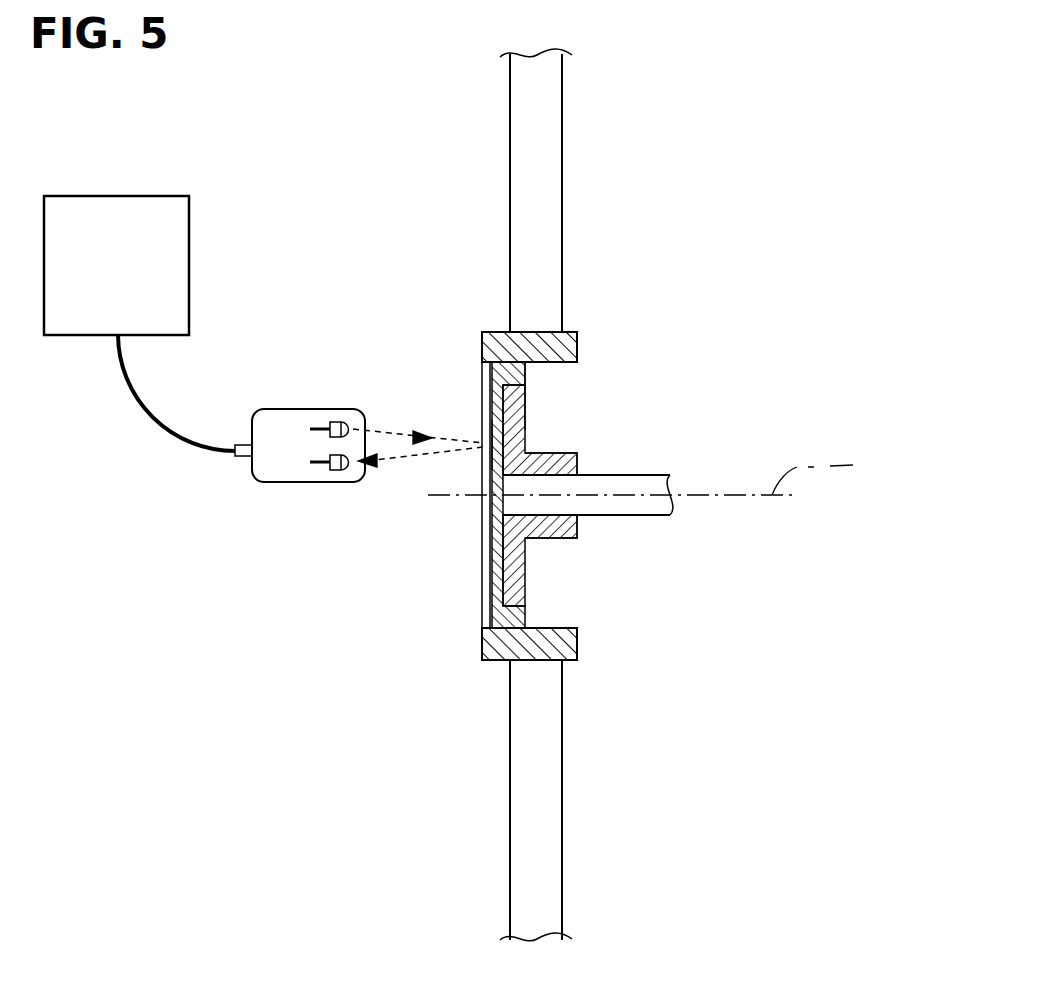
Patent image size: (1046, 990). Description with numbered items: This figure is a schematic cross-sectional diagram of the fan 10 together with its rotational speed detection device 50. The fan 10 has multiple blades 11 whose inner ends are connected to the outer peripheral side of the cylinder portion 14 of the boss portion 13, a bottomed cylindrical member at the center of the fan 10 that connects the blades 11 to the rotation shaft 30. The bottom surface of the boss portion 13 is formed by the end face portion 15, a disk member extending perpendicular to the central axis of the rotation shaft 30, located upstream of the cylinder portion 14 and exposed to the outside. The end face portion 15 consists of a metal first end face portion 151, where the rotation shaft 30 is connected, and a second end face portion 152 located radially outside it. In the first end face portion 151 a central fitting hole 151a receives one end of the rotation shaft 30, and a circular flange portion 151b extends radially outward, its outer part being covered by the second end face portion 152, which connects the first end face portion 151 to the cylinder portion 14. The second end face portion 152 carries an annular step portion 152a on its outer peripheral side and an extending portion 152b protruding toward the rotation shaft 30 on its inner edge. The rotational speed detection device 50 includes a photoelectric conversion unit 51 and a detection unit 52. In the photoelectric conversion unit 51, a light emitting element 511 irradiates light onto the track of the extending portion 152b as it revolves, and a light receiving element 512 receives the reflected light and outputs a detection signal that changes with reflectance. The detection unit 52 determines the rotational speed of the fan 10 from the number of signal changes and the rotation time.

The fan 10 is at (668, 258).
The blade 11 is at (551, 143).
The boss portion 13 is at (480, 636).
The cylinder portion 14 is at (583, 648).
The end face portion 15 is at (388, 532).
The first end face portion 151 is at (497, 548).
The fitting hole 151a is at (568, 483).
The flange portion 151b is at (524, 395).
The second end face portion 152 is at (497, 590).
The annular step portion 152a is at (483, 372).
The extending portion 152b is at (486, 446).
The rotation shaft 30 is at (670, 478).
The rotational speed detection device 50 is at (232, 222).
The photoelectric conversion unit 51 is at (284, 409).
The light emitting element 511 is at (341, 420).
The light receiving element 512 is at (338, 472).
The detection unit 52 is at (125, 196).